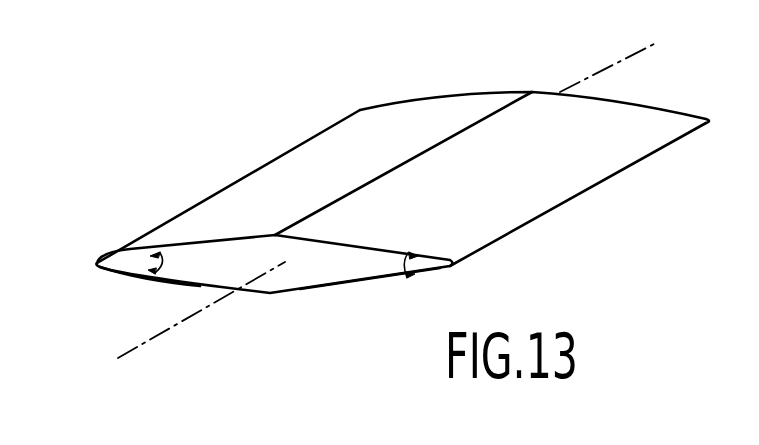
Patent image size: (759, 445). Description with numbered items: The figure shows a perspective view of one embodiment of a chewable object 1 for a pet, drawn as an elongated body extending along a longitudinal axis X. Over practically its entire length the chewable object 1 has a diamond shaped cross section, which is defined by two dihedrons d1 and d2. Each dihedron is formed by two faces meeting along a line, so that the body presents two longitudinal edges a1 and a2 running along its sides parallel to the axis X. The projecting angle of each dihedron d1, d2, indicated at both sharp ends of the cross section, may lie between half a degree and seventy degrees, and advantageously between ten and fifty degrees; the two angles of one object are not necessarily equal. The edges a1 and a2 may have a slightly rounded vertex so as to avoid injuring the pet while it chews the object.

The chewable object 1 is at (268, 113).
The longitudinal edge a1 is at (190, 210).
The longitudinal edge a2 is at (558, 208).
The dihedron d1 is at (138, 278).
The dihedron d2 is at (383, 290).
The longitudinal axis X is at (385, 198).